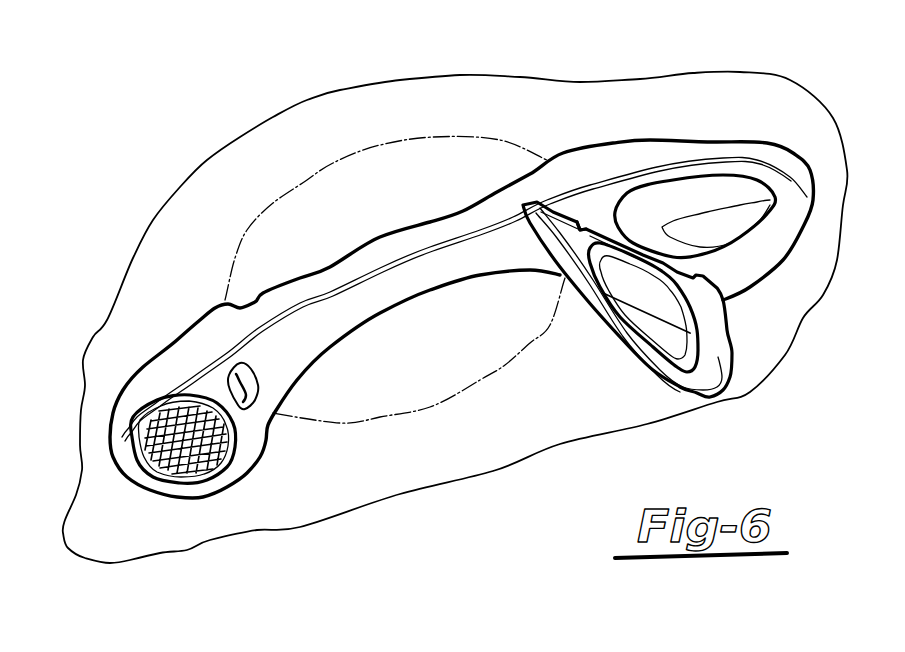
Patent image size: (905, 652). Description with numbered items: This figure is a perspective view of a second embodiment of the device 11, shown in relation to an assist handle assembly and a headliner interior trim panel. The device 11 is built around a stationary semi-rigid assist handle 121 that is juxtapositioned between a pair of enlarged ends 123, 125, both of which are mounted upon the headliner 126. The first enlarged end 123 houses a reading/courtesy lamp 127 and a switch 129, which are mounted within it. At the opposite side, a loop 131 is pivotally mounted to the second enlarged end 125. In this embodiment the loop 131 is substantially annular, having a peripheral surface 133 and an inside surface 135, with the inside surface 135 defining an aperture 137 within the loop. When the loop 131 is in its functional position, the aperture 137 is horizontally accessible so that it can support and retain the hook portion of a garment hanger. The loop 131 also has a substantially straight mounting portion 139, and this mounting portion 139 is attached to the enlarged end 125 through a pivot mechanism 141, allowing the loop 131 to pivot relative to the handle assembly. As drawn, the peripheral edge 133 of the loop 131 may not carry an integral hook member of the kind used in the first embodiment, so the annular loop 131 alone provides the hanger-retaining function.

The device 11 is at (448, 289).
The stationary semi-rigid assist handle 121 is at (333, 276).
The enlarged end 123 is at (163, 370).
The enlarged end 125 is at (723, 150).
The headliner 126 is at (240, 211).
The reading/courtesy lamp 127 is at (185, 448).
The switch 129 is at (241, 412).
The loop 131 is at (727, 367).
The peripheral surface 133 is at (647, 361).
The inside surface 135 is at (723, 357).
The aperture 137 is at (669, 338).
The mounting portion 139 is at (605, 222).
The pivot mechanism 141 is at (575, 203).